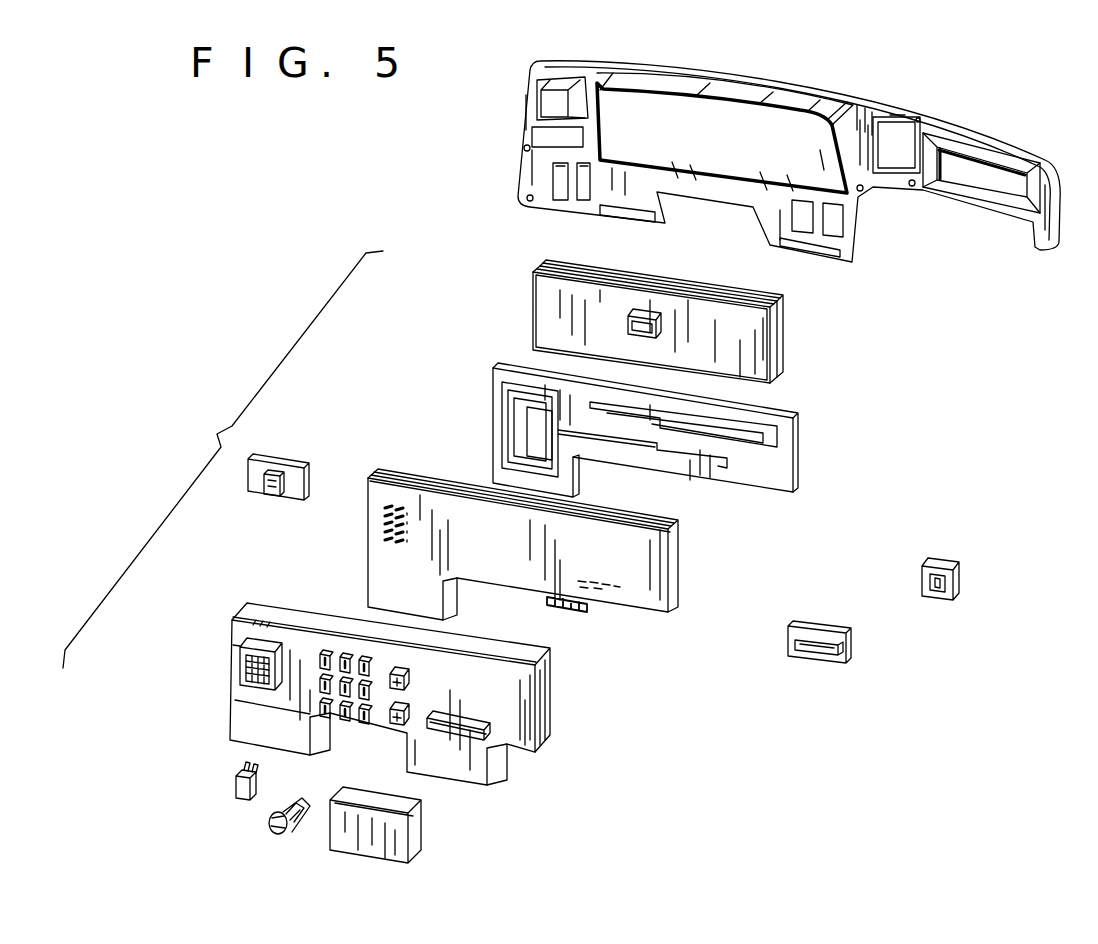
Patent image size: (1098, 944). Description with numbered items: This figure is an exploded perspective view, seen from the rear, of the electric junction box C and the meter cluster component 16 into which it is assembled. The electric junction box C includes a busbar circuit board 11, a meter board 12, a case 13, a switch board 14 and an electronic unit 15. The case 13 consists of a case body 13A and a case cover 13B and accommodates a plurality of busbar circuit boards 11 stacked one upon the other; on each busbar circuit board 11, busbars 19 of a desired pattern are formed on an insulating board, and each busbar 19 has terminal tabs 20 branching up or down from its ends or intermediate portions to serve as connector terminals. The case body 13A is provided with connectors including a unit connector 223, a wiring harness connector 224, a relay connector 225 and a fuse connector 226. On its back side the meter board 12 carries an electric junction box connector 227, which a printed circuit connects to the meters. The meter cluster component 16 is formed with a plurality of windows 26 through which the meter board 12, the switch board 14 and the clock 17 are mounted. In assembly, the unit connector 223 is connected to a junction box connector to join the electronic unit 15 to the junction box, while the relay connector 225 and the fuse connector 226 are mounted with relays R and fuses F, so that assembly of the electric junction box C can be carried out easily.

The busbar circuit board 11 is at (790, 466).
The meter board 12 is at (788, 344).
The case 13 is at (562, 712).
The case body 13A is at (537, 755).
The case cover 13B is at (545, 302).
The switch board 14 is at (283, 455).
The electronic unit 15 is at (417, 835).
The meter cluster component 16 is at (980, 128).
The clock 17 is at (937, 556).
The busbar 19 is at (508, 425).
The terminal tab 20 is at (368, 533).
The unit connector 223 is at (428, 738).
The wiring harness connector 224 is at (237, 662).
The relay connector 225 is at (318, 690).
The fuse connector 226 is at (393, 670).
The electric junction box connector 227 is at (652, 313).
The window 26 is at (833, 222).
The electric junction box C is at (223, 459).
The fuse F is at (233, 781).
The relay R is at (268, 826).